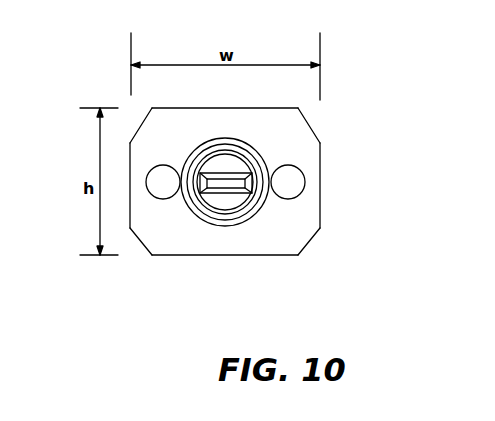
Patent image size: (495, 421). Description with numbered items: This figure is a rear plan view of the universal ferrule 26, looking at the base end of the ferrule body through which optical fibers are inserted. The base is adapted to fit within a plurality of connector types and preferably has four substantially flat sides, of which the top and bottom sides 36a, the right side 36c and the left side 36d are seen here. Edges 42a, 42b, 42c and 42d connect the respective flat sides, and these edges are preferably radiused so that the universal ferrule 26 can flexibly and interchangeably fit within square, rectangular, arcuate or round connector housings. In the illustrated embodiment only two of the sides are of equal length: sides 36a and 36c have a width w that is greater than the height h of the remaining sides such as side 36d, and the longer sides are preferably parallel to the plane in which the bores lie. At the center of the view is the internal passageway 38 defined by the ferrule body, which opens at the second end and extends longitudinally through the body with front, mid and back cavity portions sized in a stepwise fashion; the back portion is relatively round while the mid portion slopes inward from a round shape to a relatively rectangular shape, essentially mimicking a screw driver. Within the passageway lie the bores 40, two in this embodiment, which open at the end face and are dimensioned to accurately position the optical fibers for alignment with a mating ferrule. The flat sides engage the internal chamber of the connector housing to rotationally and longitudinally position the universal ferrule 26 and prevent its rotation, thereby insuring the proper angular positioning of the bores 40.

The universal ferrule 26 is at (412, 172).
The flat side 36a is at (273, 108).
The flat side 36c is at (320, 186).
The flat side 36d is at (130, 187).
The internal passageway 38 is at (218, 202).
The bore 40 is at (242, 190).
The edge 42a is at (314, 129).
The edge 42b is at (315, 235).
The edge 42c is at (143, 248).
The edge 42d is at (140, 119).